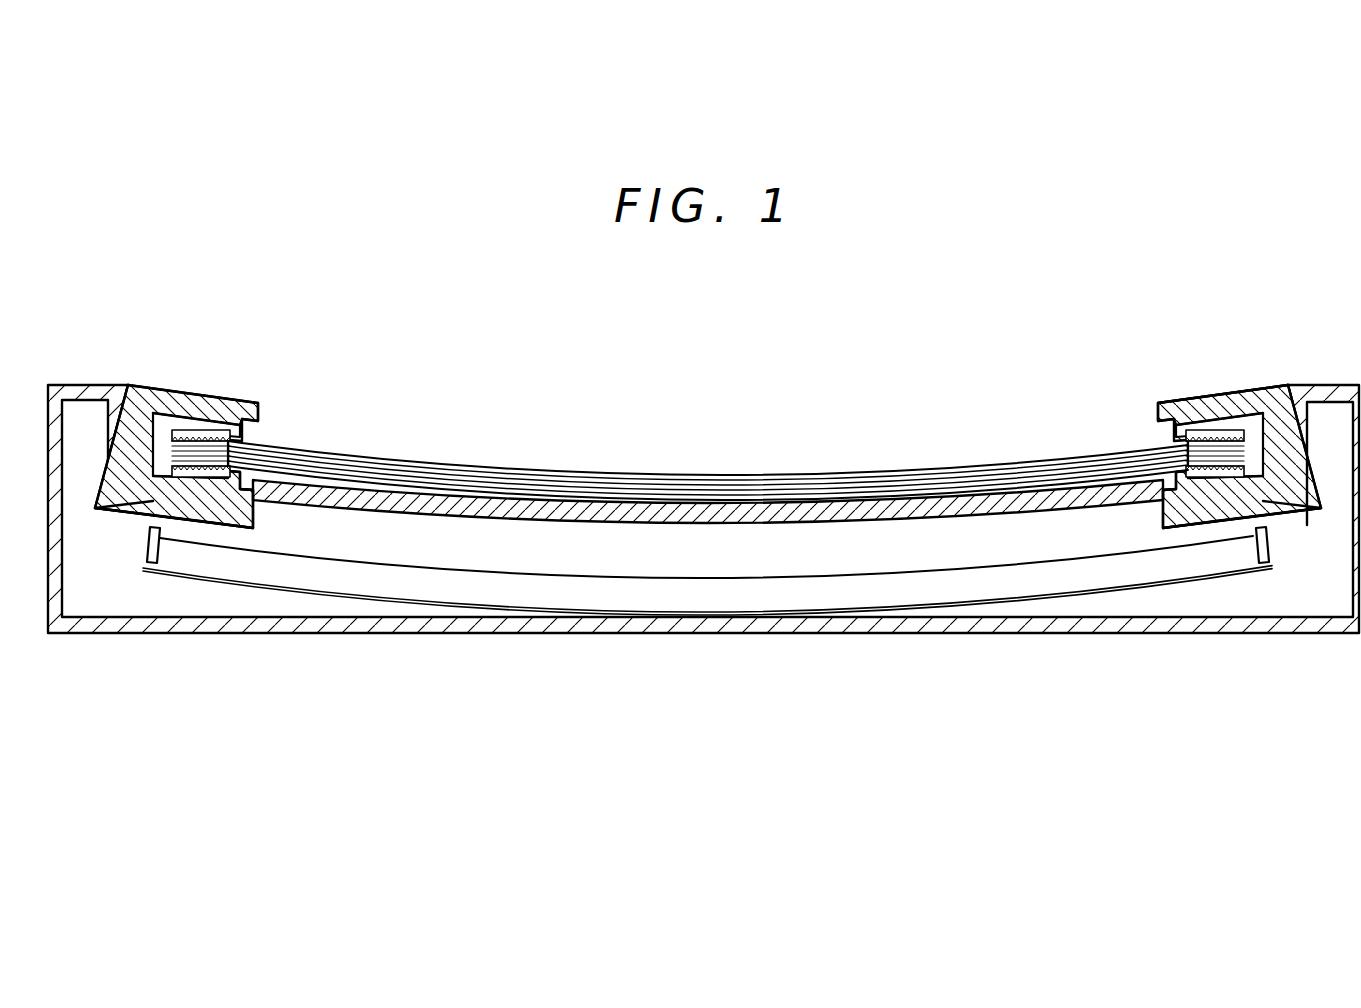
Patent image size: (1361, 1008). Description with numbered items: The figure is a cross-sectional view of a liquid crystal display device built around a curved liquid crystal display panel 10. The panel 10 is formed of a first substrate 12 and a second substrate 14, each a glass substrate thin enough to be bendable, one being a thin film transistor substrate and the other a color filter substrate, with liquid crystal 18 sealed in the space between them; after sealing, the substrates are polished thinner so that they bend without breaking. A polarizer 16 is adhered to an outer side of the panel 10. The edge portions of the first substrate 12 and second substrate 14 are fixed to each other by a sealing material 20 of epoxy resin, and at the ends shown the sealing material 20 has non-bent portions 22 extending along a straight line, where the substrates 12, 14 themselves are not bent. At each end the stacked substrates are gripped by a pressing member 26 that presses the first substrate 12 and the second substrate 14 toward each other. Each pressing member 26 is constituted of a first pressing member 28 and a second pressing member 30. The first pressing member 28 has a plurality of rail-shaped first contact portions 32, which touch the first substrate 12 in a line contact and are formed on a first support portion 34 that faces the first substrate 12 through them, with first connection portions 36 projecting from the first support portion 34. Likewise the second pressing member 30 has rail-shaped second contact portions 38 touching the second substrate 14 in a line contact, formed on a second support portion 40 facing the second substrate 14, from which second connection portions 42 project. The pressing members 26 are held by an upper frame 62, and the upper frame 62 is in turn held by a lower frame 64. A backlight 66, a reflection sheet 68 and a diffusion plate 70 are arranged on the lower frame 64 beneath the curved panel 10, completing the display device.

The liquid crystal display panel 10 is at (708, 520).
The first substrate 12 is at (823, 487).
The second substrate 14 is at (866, 497).
The polarizer 16 is at (888, 476).
The liquid crystal 18 is at (947, 474).
The sealing material 20 is at (173, 450).
The non-bent portion 22 is at (176, 482).
The pressing member 26 is at (232, 412).
The first pressing member 28 is at (250, 432).
The second pressing member 30 is at (258, 503).
The first contact portion 32 is at (245, 447).
The first support portion 34 is at (198, 425).
The first connection portion 36 is at (150, 432).
The second contact portion 38 is at (232, 487).
The second support portion 40 is at (203, 472).
The second connection portion 42 is at (125, 482).
The upper frame 62 is at (1240, 425).
The lower frame 64 is at (1067, 634).
The backlight 66 is at (703, 585).
The reflection sheet 68 is at (645, 612).
The diffusion plate 70 is at (700, 492).